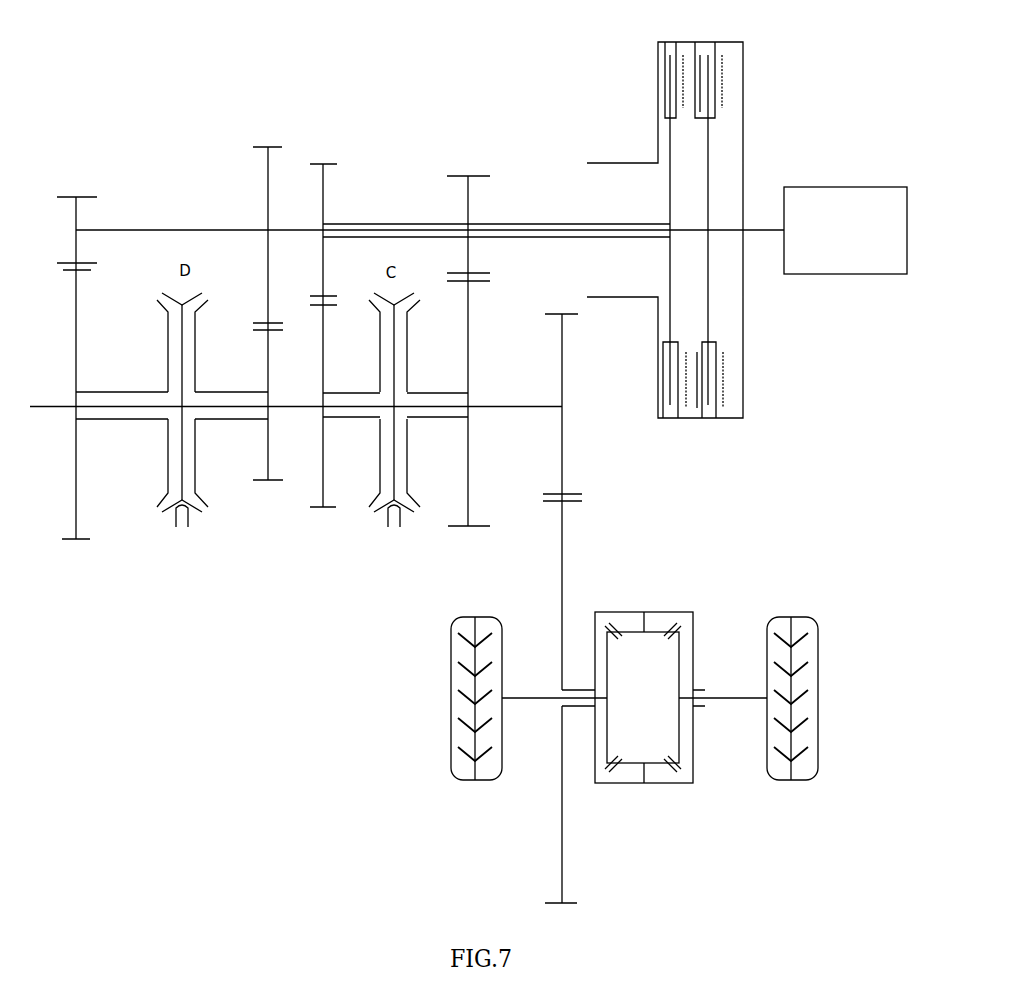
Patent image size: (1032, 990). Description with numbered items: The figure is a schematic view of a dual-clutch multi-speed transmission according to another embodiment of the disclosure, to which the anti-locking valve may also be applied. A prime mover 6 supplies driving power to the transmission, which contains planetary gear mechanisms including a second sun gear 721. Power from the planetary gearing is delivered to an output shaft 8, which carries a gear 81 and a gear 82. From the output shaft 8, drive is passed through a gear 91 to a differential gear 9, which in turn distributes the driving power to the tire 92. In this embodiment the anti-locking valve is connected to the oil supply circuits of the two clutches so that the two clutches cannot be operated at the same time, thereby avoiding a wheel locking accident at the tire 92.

The prime mover 6 is at (846, 187).
The output shaft 8 is at (303, 412).
The gear 81 is at (260, 480).
The gear 82 is at (577, 492).
The differential gear 9 is at (665, 612).
The gear 91 is at (580, 500).
The tire 92 is at (448, 650).
The second sun gear 721 is at (258, 147).